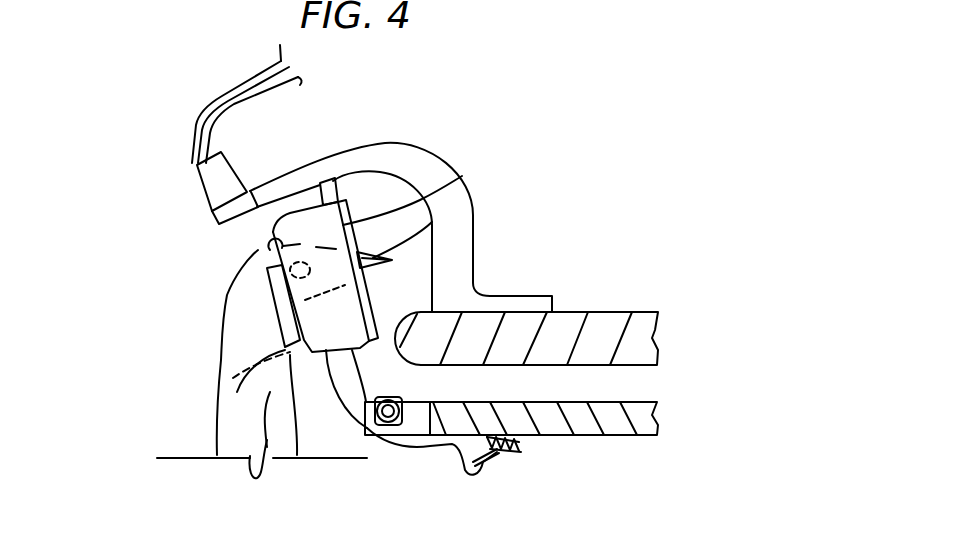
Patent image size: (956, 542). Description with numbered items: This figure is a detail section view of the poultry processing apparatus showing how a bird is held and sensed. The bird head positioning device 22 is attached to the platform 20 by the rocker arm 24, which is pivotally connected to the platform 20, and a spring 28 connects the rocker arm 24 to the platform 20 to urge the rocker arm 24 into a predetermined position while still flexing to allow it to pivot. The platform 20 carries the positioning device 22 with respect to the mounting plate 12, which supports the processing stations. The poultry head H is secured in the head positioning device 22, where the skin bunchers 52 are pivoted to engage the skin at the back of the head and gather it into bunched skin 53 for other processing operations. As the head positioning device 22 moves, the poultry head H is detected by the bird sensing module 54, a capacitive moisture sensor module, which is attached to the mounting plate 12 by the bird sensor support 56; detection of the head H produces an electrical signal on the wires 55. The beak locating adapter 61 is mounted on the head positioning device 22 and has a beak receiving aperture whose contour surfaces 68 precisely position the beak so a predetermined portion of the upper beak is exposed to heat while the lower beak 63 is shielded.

The mounting plate 12 is at (570, 321).
The platform 20 is at (580, 423).
The bird head positioning device 22 is at (280, 231).
The rocker arm 24 is at (450, 447).
The spring 28 is at (513, 448).
The skin bunchers 52 is at (280, 300).
The bunched skin 53 is at (262, 282).
The bird sensing module 54 is at (203, 184).
The wires 55 is at (247, 81).
The bird sensor support 56 is at (422, 178).
The beak locating adapter 61 is at (461, 177).
The lower beak 63 is at (473, 219).
The contour surfaces 68 is at (228, 390).
The poultry head H is at (247, 267).